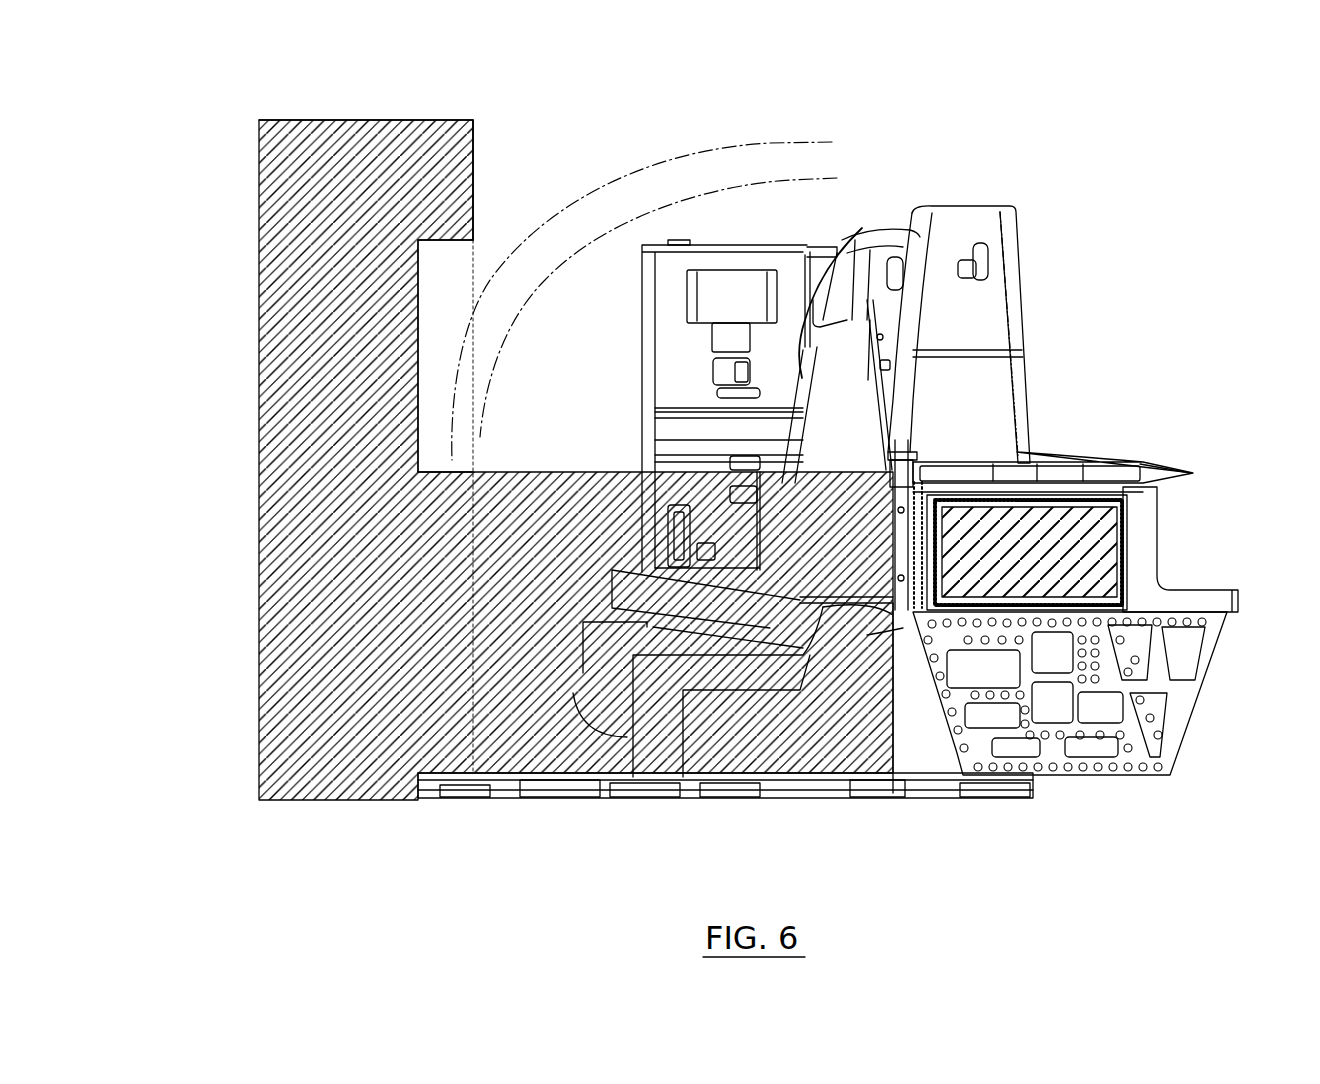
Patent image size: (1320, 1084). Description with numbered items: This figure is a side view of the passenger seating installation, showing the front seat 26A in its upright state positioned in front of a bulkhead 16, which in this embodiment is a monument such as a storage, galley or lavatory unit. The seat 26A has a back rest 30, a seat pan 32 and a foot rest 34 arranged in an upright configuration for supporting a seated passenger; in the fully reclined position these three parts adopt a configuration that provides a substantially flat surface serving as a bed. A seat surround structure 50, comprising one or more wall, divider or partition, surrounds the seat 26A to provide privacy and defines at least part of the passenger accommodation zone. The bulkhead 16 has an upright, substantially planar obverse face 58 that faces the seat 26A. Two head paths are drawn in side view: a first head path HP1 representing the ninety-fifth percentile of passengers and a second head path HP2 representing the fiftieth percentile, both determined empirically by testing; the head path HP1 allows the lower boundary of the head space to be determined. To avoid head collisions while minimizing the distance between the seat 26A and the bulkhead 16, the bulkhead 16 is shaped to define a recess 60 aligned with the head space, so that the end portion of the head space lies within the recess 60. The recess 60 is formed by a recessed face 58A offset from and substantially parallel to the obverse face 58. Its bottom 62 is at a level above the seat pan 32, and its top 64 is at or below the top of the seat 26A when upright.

The bulkhead 16 is at (474, 197).
The seat 26A is at (865, 423).
The back rest 30 is at (800, 325).
The seat pan 32 is at (722, 612).
The foot rest 34 is at (583, 693).
The seat surround structure 50 is at (1017, 257).
The obverse face 58 is at (477, 157).
The recessed face 58A is at (410, 338).
The recess 60 is at (440, 287).
The bottom of the recess 62 is at (432, 472).
The top of the recess 64 is at (425, 240).
The first head path HP1 is at (777, 140).
The second head path HP2 is at (813, 178).